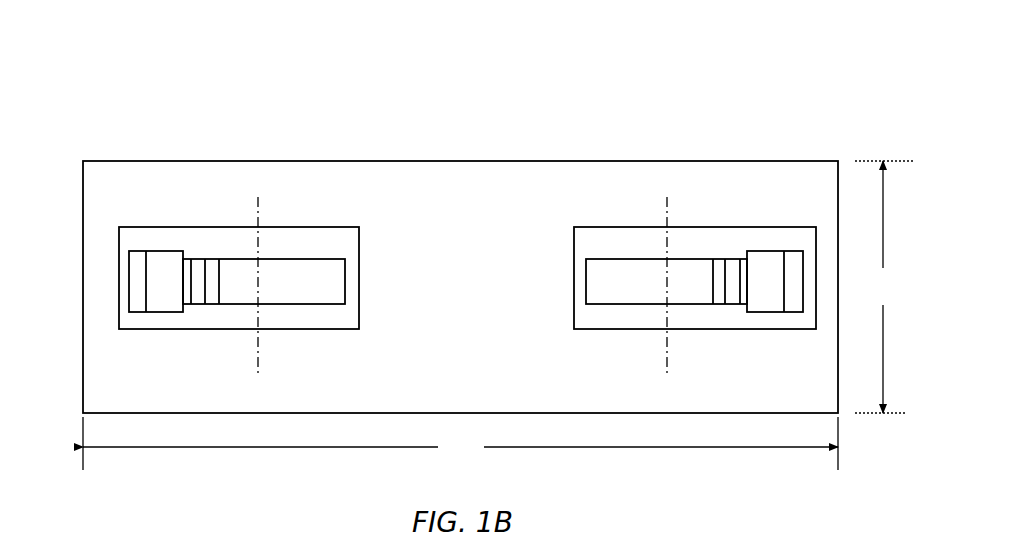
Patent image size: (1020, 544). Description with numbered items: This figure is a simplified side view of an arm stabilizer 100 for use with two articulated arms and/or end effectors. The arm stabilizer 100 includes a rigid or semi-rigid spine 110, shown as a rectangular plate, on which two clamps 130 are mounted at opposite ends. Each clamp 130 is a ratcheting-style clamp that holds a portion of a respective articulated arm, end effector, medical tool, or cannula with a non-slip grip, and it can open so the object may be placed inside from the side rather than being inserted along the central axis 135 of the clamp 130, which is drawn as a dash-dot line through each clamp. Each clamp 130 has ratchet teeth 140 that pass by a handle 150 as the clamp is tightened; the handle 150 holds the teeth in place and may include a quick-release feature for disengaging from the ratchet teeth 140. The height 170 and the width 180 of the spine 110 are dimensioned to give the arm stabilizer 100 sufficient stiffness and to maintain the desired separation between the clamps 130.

The arm stabilizer 100 is at (164, 99).
The spine 110 is at (642, 161).
The clamp 130 is at (282, 305).
The central axis 135 is at (258, 197).
The ratchet teeth 140 is at (205, 305).
The handle 150 is at (129, 281).
The height 170 is at (885, 287).
The width 180 is at (460, 443).